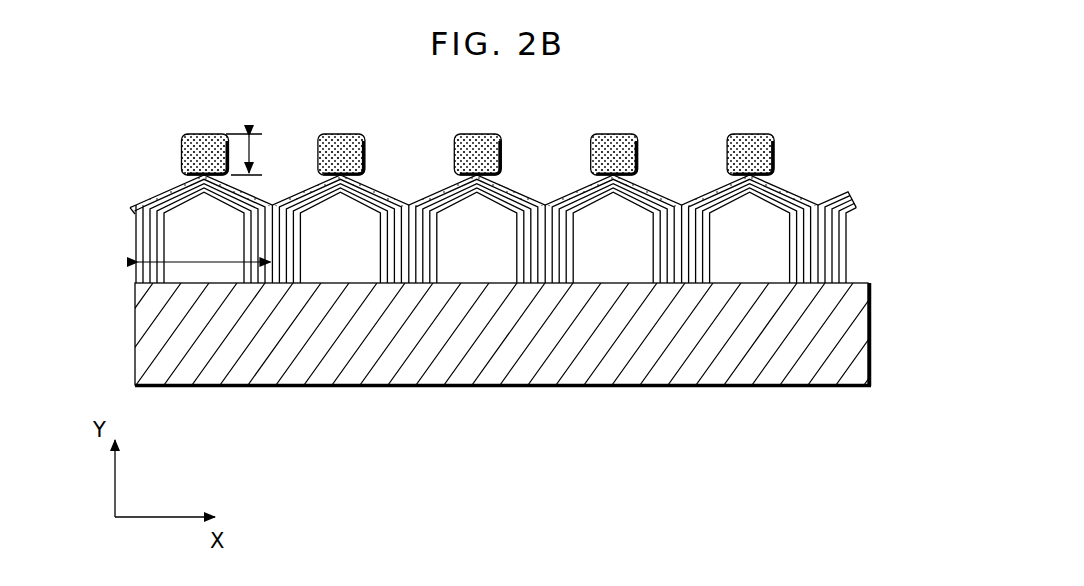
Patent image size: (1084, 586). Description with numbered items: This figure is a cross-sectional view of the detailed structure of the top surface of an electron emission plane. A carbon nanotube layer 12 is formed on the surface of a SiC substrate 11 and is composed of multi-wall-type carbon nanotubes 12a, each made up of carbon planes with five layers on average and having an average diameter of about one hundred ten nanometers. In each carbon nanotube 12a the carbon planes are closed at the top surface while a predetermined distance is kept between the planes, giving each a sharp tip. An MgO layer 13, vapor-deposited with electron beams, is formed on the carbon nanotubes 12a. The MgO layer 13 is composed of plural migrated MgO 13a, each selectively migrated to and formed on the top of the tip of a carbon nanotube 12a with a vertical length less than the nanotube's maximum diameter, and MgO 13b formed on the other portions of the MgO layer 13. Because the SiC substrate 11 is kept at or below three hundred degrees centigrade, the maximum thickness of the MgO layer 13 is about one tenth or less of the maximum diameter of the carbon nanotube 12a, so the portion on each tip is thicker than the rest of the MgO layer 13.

The SiC substrate 11 is at (843, 331).
The carbon nanotube layer 12 is at (499, 225).
The carbon nanotube 12a is at (195, 231).
The MgO layer 13 is at (517, 140).
The migrated MgO 13a is at (747, 150).
The MgO 13b is at (788, 183).